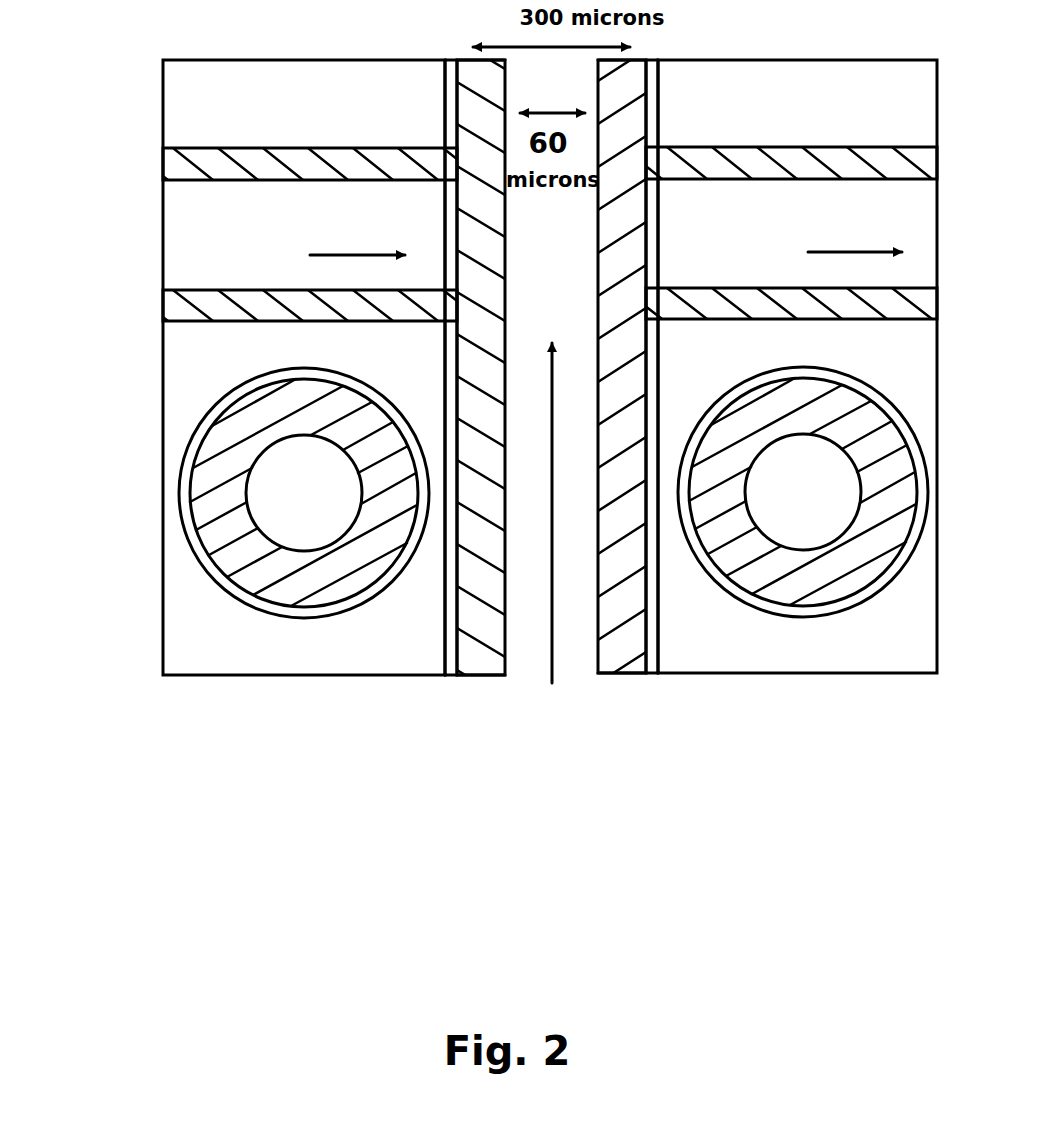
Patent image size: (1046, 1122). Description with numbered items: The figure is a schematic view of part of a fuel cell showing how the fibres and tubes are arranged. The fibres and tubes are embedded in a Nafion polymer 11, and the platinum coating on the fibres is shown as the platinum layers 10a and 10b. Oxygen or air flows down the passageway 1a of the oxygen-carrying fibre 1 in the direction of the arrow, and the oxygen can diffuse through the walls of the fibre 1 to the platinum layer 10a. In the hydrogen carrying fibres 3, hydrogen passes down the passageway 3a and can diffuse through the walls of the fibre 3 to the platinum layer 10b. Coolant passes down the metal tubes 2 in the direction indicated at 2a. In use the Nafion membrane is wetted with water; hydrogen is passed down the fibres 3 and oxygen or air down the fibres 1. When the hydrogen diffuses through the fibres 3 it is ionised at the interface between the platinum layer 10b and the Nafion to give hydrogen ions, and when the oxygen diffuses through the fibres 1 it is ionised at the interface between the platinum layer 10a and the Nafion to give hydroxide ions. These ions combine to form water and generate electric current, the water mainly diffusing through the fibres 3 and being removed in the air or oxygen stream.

The fibre 1 is at (551, 430).
The passageway 1a is at (560, 455).
The metal tube 2 is at (553, 492).
The coolant flow direction 2a is at (553, 492).
The hydrogen carrying fibre 3 is at (509, 234).
The passageway 3a is at (560, 231).
The platinum layer 10a is at (448, 675).
The platinum layer 10b is at (316, 617).
The Nafion polymer 11 is at (550, 367).